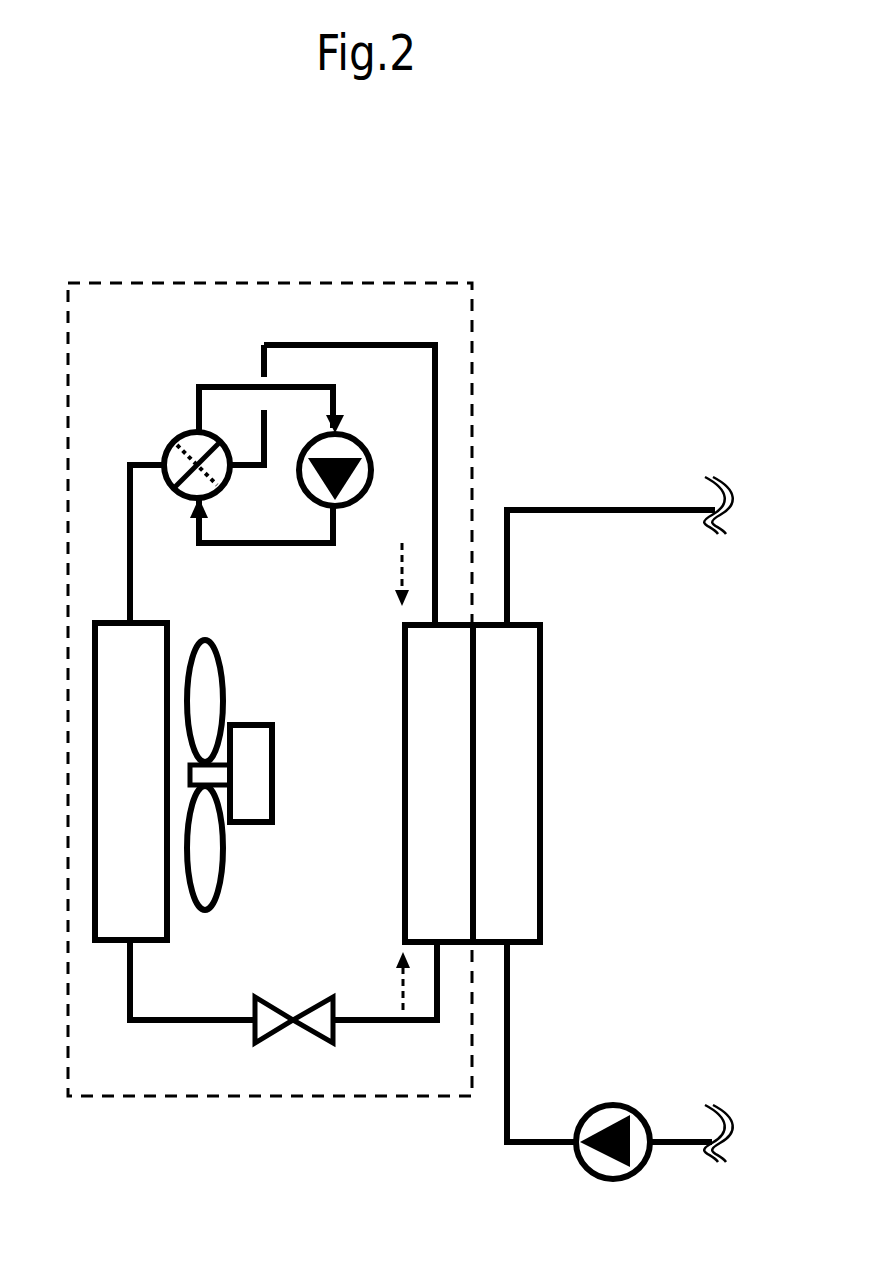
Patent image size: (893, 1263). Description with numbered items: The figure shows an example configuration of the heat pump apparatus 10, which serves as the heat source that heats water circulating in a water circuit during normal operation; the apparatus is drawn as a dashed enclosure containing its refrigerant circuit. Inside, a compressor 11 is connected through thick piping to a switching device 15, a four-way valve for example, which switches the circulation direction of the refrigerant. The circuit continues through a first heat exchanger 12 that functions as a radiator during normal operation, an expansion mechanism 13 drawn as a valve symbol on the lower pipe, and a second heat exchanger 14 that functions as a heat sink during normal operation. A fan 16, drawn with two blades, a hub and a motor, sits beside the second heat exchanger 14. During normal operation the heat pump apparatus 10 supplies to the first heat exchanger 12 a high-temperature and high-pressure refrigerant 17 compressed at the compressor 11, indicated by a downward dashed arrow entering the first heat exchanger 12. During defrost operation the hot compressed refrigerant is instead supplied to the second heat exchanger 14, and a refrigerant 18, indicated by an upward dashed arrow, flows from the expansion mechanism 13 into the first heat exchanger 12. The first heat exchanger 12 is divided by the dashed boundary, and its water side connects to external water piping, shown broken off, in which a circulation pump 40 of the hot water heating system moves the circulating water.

The heat pump apparatus 10 is at (168, 283).
The compressor 11 is at (352, 437).
The first heat exchanger 12 is at (403, 750).
The expansion mechanism 13 is at (257, 997).
The second heat exchanger 14 is at (165, 622).
The switching device 15 is at (178, 436).
The fan 16 is at (218, 658).
The high-temperature and high-pressure refrigerant 17 is at (398, 555).
The refrigerant 18 is at (403, 982).
The circulation pump 40 is at (610, 1108).